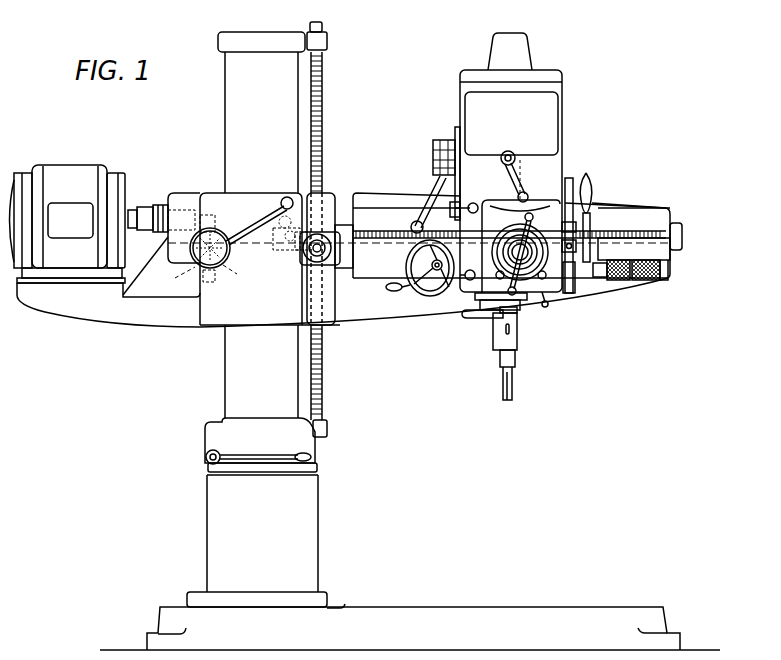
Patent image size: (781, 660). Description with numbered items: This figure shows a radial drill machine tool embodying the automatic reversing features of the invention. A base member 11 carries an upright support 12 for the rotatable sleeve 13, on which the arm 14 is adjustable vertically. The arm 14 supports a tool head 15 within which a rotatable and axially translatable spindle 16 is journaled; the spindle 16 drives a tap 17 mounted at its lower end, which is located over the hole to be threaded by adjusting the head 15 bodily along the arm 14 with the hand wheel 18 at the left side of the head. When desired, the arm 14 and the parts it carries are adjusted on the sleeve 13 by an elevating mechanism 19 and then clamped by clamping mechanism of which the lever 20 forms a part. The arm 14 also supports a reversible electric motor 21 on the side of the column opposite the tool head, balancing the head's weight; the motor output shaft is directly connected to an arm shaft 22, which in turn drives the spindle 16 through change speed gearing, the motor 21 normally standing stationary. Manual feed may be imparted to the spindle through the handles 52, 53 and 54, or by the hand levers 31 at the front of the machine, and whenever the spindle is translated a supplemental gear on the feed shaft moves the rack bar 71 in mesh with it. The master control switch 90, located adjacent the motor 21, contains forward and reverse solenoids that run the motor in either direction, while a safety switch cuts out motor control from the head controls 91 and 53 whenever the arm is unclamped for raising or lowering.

The base member 11 is at (457, 606).
The upright support 12 is at (308, 538).
The rotatable sleeve 13 is at (237, 387).
The arm 14 is at (367, 205).
The tool head 15 is at (563, 108).
The spindle 16 is at (516, 343).
The tap 17 is at (513, 380).
The hand wheel 18 is at (425, 291).
The elevating mechanism 19 is at (322, 362).
The lever 20 is at (262, 217).
The reversible electric motor 21 is at (58, 182).
The arm shaft 22 is at (273, 244).
The hand levers 31 is at (545, 202).
The handle or lever 52 is at (595, 178).
The control handle 53 is at (619, 281).
The handle 54 is at (654, 281).
The rack bar 71 is at (573, 193).
The master control switch 90 is at (93, 170).
The head controls 91 is at (463, 300).